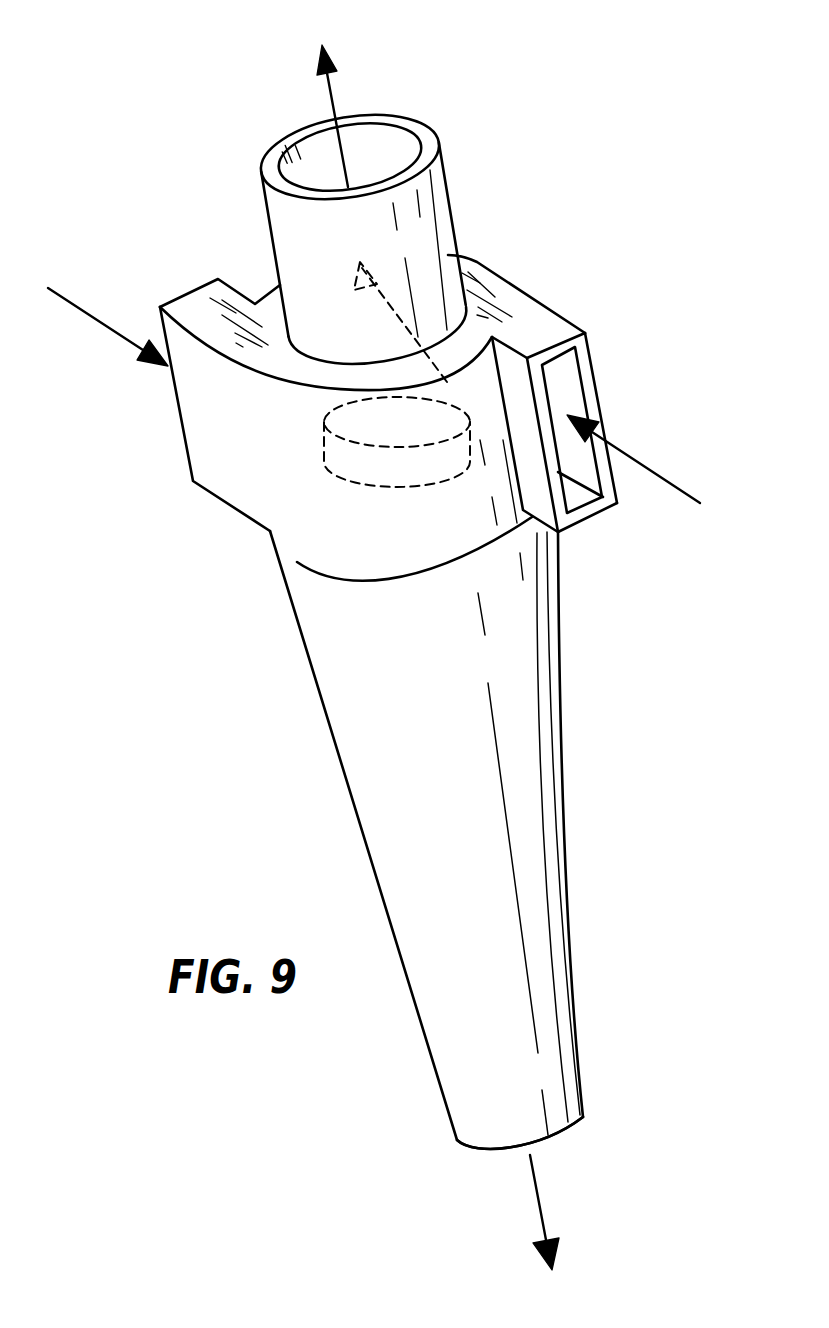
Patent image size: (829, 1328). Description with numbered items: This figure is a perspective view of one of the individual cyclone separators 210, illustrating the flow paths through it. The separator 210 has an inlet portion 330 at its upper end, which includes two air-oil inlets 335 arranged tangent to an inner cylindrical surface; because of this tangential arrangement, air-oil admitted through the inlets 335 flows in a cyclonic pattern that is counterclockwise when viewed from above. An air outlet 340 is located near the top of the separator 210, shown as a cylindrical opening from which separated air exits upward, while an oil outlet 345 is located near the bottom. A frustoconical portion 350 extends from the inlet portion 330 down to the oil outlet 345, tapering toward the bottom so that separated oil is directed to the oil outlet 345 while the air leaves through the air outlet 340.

The individual cyclone separator 210 is at (624, 156).
The inlet portion 330 is at (533, 313).
The air-oil inlets 335 is at (160, 328).
The air outlet 340 is at (410, 146).
The oil outlet 345 is at (483, 1154).
The frustoconical portion 350 is at (518, 712).